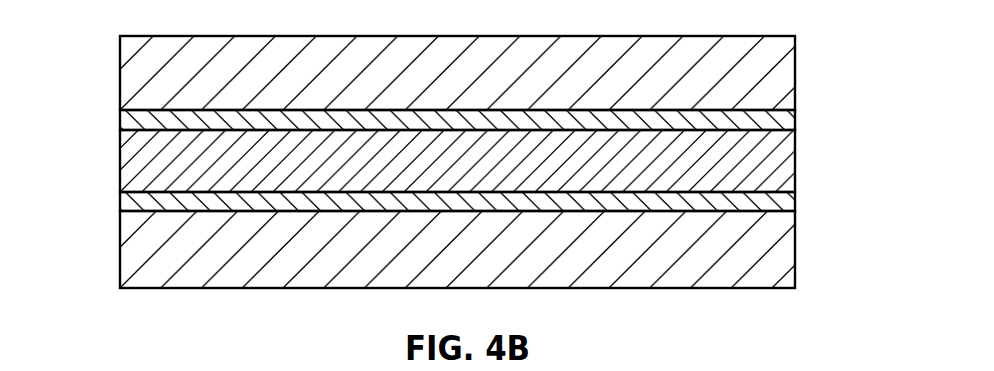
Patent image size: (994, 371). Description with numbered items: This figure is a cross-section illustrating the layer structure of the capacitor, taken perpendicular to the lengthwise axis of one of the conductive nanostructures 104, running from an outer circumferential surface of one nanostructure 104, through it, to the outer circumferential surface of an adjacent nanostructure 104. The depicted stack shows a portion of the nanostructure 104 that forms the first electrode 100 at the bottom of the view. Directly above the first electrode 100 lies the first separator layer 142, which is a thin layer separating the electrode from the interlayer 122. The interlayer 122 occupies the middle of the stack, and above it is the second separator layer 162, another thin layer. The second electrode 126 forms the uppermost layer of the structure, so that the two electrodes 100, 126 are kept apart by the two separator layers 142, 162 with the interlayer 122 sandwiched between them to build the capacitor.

The first electrode 100 is at (426, 249).
The conductive nanostructure 104 is at (150, 233).
The interlayer 122 is at (148, 166).
The second electrode 126 is at (158, 58).
The first separator layer 142 is at (150, 203).
The second separator layer 162 is at (121, 122).